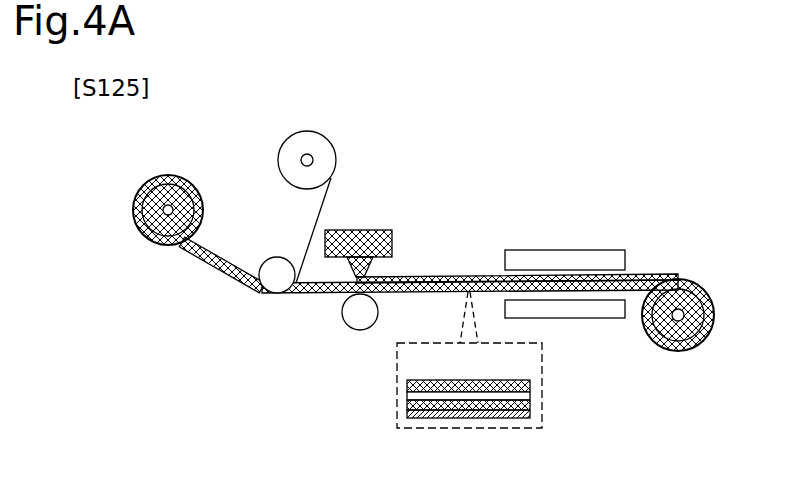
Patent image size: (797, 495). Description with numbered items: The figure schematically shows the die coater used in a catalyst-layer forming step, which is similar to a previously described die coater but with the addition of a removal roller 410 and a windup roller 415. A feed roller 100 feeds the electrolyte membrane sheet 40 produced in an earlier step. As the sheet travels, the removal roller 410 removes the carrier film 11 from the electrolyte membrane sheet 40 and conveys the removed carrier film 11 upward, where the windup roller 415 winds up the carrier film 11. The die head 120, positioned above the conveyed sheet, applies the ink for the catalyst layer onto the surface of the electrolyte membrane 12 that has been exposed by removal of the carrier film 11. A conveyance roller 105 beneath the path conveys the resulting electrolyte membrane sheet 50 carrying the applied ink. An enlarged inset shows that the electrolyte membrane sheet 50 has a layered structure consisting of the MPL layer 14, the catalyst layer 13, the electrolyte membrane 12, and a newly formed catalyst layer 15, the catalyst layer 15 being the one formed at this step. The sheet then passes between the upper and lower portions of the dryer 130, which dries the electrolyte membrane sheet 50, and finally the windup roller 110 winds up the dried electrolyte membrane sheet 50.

The electrolyte membrane sheet 40 is at (133, 212).
The feed roller 100 is at (178, 176).
The removal roller 410 is at (273, 257).
The windup roller 415 is at (312, 158).
The carrier film 11 is at (332, 188).
The die head 120 is at (359, 230).
The electrolyte membrane sheet 50 is at (447, 276).
The dryer 130 is at (592, 250).
The windup roller 110 is at (711, 306).
The conveyance roller 105 is at (341, 306).
The catalyst layer 15 is at (407, 384).
The electrolyte membrane 12 is at (407, 396).
The catalyst layer 13 is at (407, 405).
The MPL layer 14 is at (407, 415).